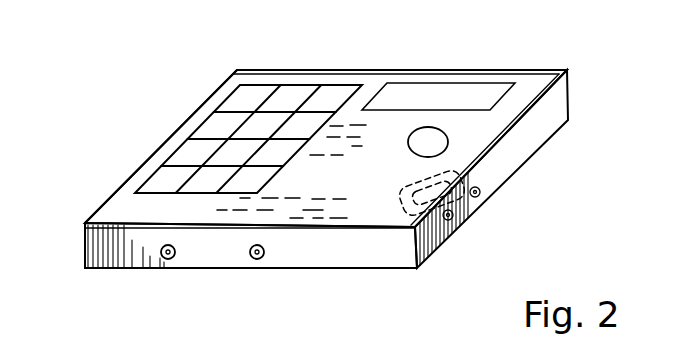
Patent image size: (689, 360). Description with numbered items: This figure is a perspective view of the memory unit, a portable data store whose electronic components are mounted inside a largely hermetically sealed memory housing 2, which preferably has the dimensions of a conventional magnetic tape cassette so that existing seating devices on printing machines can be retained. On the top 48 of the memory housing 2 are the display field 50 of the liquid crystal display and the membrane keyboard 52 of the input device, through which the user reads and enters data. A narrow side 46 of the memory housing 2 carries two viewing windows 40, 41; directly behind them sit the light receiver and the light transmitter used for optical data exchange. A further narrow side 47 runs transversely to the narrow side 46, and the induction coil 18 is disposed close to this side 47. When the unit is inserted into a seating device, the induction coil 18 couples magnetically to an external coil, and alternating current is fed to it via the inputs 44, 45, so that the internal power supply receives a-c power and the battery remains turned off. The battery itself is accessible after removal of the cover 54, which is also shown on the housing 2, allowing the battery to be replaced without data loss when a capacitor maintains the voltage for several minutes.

The housing 2 is at (98, 190).
The induction coil 18 is at (483, 182).
The viewing window 40 is at (169, 260).
The viewing window 41 is at (256, 260).
The input 44 is at (456, 226).
The input 45 is at (481, 199).
The narrow side 46 is at (370, 254).
The narrow side 47 is at (518, 143).
The top 48 is at (147, 163).
The display field 50 is at (472, 92).
The membrane keyboard 52 is at (213, 123).
The cover 54 is at (428, 136).